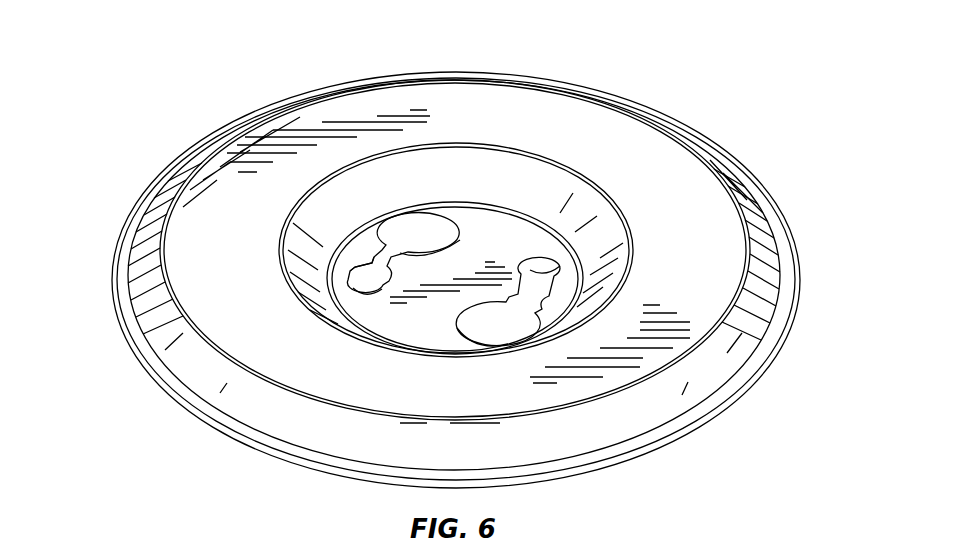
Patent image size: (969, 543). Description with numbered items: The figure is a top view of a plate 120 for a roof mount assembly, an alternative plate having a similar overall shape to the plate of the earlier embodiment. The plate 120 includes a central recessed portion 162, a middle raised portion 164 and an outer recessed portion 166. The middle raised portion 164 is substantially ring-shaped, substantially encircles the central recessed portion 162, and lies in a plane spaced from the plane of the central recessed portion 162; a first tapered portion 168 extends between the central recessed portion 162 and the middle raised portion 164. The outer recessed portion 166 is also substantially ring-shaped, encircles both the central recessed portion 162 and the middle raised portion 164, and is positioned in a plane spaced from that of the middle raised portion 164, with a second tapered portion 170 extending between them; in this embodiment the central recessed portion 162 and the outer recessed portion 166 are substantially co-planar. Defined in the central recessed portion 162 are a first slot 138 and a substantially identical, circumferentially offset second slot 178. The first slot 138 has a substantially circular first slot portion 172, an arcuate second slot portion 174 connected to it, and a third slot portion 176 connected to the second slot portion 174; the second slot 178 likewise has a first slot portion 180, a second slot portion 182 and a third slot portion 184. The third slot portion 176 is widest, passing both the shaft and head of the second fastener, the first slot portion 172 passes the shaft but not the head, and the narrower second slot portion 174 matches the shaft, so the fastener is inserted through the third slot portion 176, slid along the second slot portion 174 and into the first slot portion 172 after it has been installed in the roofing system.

The plate 120 is at (163, 133).
The first slot 138 is at (372, 262).
The central recessed portion 162 is at (505, 232).
The middle raised portion 164 is at (606, 140).
The outer recessed portion 166 is at (773, 210).
The first tapered portion 168 is at (462, 178).
The second tapered portion 170 is at (747, 200).
The first slot portion 172 is at (362, 282).
The second slot portion 174 is at (365, 268).
The third slot portion 176 is at (412, 222).
The second slot 178 is at (525, 293).
The first slot portion 180 is at (566, 268).
The second slot portion 182 is at (533, 311).
The third slot portion 184 is at (505, 340).